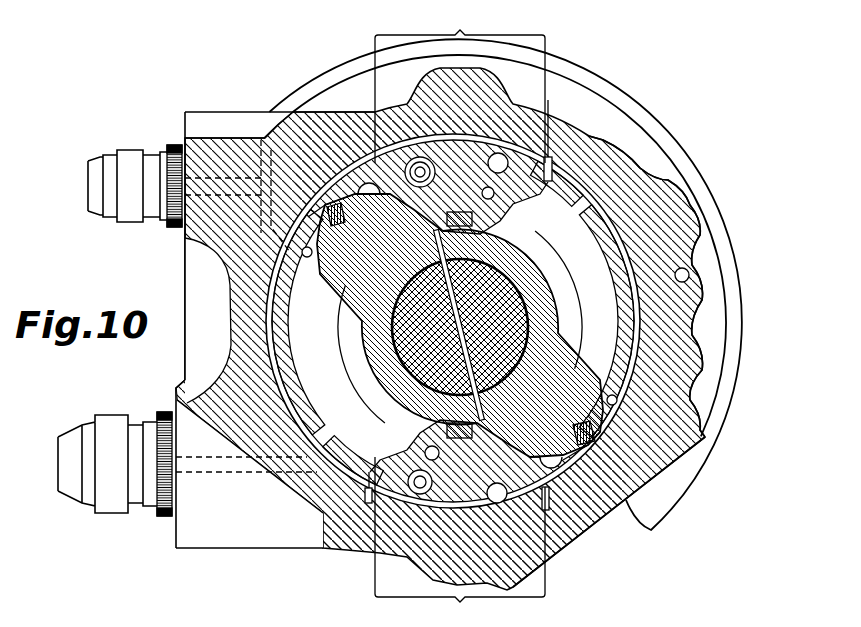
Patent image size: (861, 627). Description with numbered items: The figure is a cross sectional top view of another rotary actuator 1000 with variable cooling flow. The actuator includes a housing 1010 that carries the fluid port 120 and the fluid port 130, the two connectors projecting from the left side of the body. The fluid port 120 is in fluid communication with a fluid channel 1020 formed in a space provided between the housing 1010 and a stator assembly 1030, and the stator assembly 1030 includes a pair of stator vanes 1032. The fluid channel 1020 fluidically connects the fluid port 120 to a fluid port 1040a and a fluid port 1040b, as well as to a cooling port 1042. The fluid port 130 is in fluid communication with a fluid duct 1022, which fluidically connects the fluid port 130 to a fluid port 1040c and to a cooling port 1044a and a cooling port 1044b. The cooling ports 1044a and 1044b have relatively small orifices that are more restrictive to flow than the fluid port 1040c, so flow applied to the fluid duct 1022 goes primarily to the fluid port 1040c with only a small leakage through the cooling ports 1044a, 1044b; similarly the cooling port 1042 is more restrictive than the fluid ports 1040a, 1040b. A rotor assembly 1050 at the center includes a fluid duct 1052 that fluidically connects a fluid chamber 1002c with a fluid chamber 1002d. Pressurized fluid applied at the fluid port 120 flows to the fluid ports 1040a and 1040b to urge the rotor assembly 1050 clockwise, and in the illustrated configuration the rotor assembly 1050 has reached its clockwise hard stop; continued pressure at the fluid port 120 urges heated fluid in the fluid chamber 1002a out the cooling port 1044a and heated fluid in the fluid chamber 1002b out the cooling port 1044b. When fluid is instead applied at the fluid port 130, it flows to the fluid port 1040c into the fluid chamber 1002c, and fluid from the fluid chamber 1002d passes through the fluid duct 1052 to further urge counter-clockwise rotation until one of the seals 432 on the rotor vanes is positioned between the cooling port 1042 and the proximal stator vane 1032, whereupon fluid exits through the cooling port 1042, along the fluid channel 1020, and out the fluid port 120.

The rotary actuator 1000 is at (150, 110).
The fluid port 130 is at (88, 183).
The fluid port 120 is at (60, 478).
The housing 1010 is at (222, 112).
The fluid chamber 1002a is at (300, 343).
The fluid chamber 1002b is at (618, 300).
The fluid chamber 1002c is at (290, 136).
The fluid chamber 1002d is at (608, 509).
The stator vanes 1032 is at (460, 317).
The fluid port 1040a is at (345, 500).
The fluid port 1040b is at (552, 172).
The fluid port 1040c is at (549, 512).
The fluid channel 1020 is at (373, 489).
The fluid duct 1022 is at (670, 137).
The stator assembly 1030 is at (703, 425).
The cooling port 1042 is at (187, 403).
The cooling port 1044a is at (290, 292).
The cooling port 1044b is at (615, 400).
The rotor assembly 1050 is at (550, 243).
The fluid duct 1052 is at (540, 288).
The seal 432 is at (328, 226).